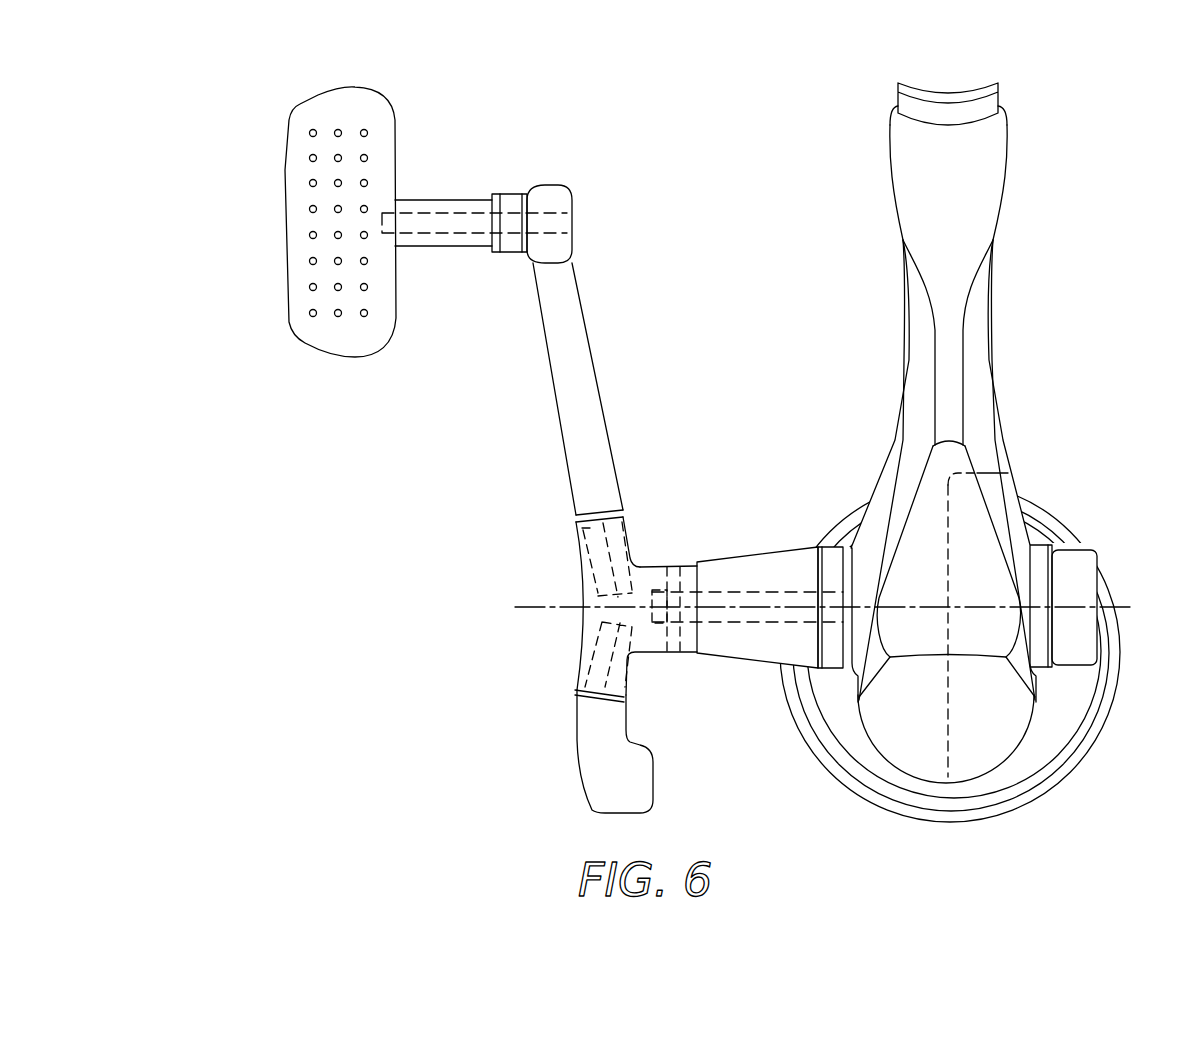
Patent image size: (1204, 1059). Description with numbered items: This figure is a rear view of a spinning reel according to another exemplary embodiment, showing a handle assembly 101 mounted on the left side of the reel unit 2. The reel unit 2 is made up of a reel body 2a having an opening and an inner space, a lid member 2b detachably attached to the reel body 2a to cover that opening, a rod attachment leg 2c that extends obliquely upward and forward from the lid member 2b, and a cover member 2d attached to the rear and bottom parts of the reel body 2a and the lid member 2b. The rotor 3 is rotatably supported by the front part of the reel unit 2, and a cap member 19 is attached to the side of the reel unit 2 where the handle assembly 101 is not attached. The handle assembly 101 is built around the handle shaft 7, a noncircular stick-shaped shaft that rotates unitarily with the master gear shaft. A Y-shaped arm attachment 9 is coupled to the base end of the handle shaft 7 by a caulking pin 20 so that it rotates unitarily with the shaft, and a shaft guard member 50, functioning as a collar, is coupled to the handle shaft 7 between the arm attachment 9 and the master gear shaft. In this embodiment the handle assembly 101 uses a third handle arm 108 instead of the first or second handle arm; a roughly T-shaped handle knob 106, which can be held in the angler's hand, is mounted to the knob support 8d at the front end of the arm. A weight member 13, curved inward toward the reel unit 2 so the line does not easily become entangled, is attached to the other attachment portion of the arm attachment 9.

The reel unit 2 is at (982, 445).
The reel body 2a is at (1008, 473).
The lid member 2b is at (922, 464).
The rod attachment leg 2c is at (958, 275).
The cover member 2d is at (905, 700).
The rotor 3 is at (1092, 770).
The handle shaft 7 is at (745, 622).
The knob support 8d is at (576, 198).
The arm attachment 9 is at (590, 584).
The weight member 13 is at (605, 762).
The cap member 19 is at (1085, 590).
The caulking pin 20 is at (672, 652).
The shaft guard member 50 is at (771, 575).
The handle assembly 101 is at (493, 427).
The handle knob 106 is at (282, 146).
The third handle arm 108 is at (565, 452).